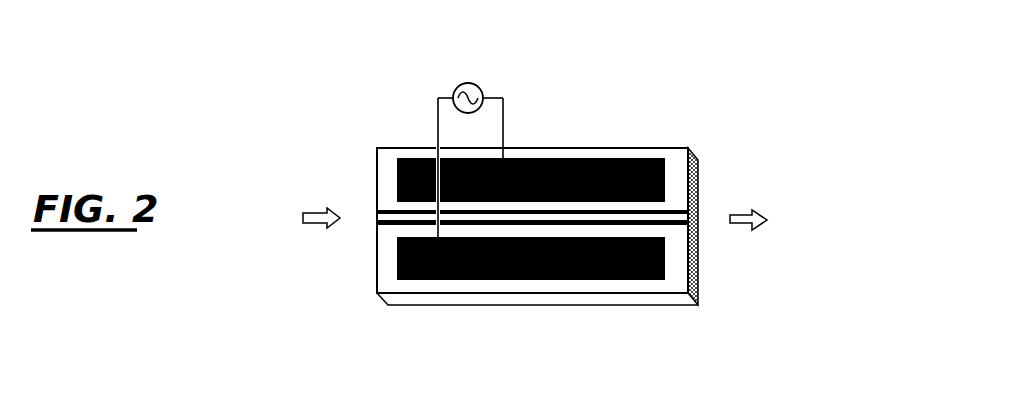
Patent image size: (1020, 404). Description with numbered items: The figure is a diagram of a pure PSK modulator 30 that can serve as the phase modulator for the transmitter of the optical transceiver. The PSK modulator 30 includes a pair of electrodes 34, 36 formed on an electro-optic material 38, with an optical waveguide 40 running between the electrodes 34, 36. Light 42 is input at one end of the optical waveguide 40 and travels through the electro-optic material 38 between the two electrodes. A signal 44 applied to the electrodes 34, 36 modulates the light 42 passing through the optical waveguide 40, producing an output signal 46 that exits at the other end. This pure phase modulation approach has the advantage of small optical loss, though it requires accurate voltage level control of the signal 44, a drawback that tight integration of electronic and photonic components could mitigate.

The PSK modulator 30 is at (744, 70).
The electrode 34 is at (597, 160).
The electrode 36 is at (640, 280).
The electro-optic material 38 is at (377, 279).
The optical waveguide 40 is at (673, 212).
The light 42 is at (317, 170).
The signal 44 is at (474, 84).
The output signal 46 is at (777, 185).